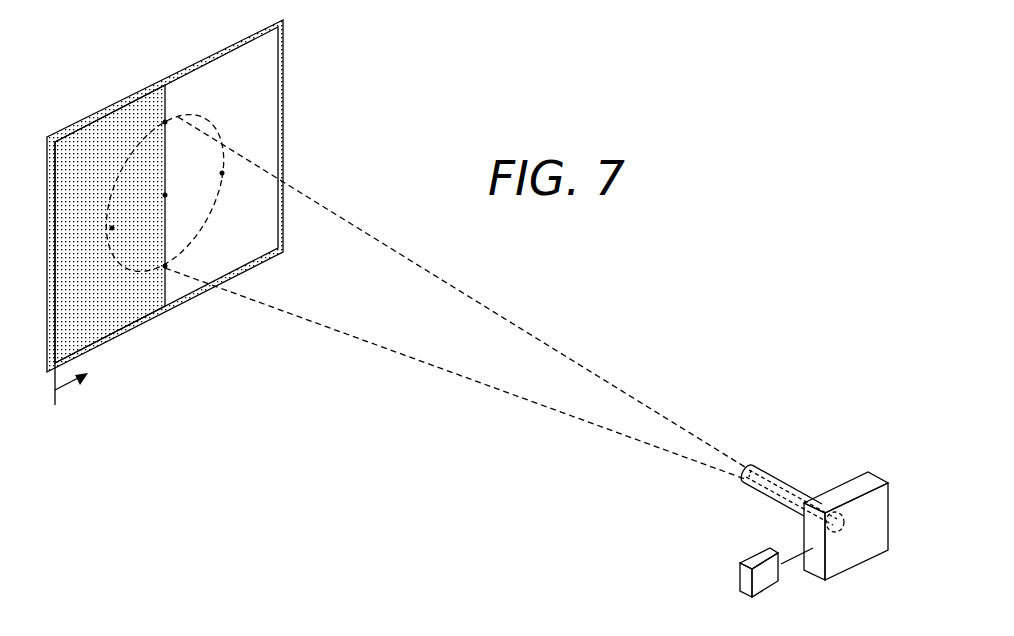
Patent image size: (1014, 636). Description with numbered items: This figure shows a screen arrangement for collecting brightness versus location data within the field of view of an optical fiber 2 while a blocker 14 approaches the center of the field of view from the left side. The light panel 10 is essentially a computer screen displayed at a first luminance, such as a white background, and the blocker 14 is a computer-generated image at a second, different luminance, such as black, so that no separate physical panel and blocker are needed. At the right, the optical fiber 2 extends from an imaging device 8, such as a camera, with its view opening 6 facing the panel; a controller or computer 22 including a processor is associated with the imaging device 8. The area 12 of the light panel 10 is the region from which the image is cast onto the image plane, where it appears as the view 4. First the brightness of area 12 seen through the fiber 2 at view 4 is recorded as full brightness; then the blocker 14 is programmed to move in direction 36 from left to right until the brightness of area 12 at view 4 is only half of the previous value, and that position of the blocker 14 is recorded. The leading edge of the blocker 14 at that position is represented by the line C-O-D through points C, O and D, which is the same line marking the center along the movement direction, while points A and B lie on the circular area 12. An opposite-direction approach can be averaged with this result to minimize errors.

The light panel 10 is at (283, 62).
The area of light panel 12 is at (198, 143).
The blocker 14 is at (101, 137).
The direction in which blocker is moved 36 is at (55, 390).
The optical fiber 2 is at (785, 490).
The view 4 is at (847, 520).
The view opening 6 is at (742, 473).
The imaging device 8 is at (855, 483).
The controller 22 is at (742, 578).
The point A on circle A is at (112, 228).
The point B on circle B is at (222, 173).
The point C of line C-O-D C is at (165, 122).
The point D of line C-O- D is at (165, 266).
The point O of line C-O-D O is at (165, 195).